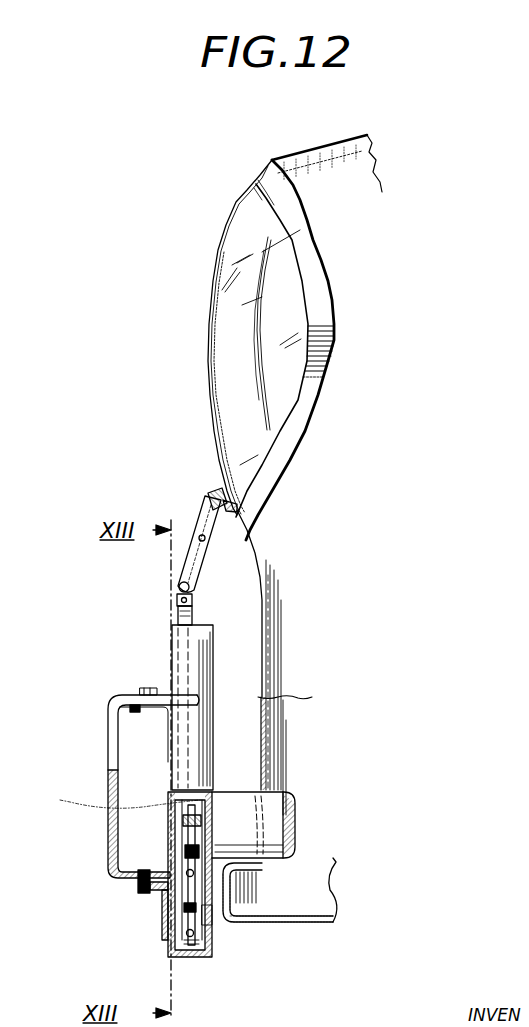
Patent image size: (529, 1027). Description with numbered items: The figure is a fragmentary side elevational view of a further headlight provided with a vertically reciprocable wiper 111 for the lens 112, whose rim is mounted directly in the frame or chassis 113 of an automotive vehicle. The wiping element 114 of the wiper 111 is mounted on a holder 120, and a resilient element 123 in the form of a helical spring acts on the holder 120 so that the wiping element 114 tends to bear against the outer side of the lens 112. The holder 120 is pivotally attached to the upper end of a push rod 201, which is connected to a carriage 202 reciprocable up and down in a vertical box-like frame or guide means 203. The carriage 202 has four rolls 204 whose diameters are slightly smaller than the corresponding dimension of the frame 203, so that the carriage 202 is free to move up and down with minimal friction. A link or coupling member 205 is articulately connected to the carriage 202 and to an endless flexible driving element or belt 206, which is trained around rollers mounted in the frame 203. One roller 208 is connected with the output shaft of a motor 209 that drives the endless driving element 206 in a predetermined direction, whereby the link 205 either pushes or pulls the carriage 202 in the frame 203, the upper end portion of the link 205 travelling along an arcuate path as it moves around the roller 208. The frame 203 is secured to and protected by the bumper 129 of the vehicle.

The wiper 111 is at (189, 528).
The lens 112 is at (205, 300).
The frame or chassis 113 is at (313, 158).
The wiping element 114 is at (208, 484).
The holder 120 is at (171, 566).
The resilient element 123 is at (260, 662).
The bumper 129 is at (103, 840).
The push rod 201 is at (170, 612).
The carriage 202 is at (183, 897).
The frame or guide means 203 is at (172, 653).
The rolls 204 is at (210, 878).
The link or coupling member 205 is at (210, 918).
The endless flexible driving element or belt 206 is at (112, 797).
The roller 208 is at (195, 820).
The motor 209 is at (285, 824).